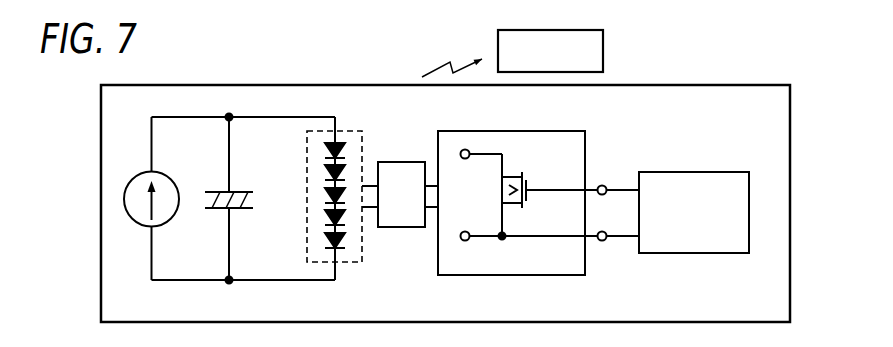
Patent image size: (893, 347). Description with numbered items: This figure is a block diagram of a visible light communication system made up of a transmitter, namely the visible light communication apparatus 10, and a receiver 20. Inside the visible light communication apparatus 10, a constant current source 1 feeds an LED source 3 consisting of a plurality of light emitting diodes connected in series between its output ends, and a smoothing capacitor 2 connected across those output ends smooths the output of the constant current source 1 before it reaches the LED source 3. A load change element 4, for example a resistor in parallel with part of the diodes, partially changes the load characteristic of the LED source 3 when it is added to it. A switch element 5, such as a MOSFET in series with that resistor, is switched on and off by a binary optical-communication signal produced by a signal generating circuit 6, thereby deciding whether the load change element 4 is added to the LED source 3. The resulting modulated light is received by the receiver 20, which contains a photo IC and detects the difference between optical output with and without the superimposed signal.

The constant current source 1 is at (138, 225).
The smoothing capacitor 2 is at (220, 213).
The LED source 3 is at (362, 139).
The load change element 4 is at (398, 228).
The switch element 5 is at (585, 143).
The signal generating circuit 6 is at (693, 170).
The visible light communication apparatus 10 is at (742, 92).
The receiver 20 is at (603, 50).